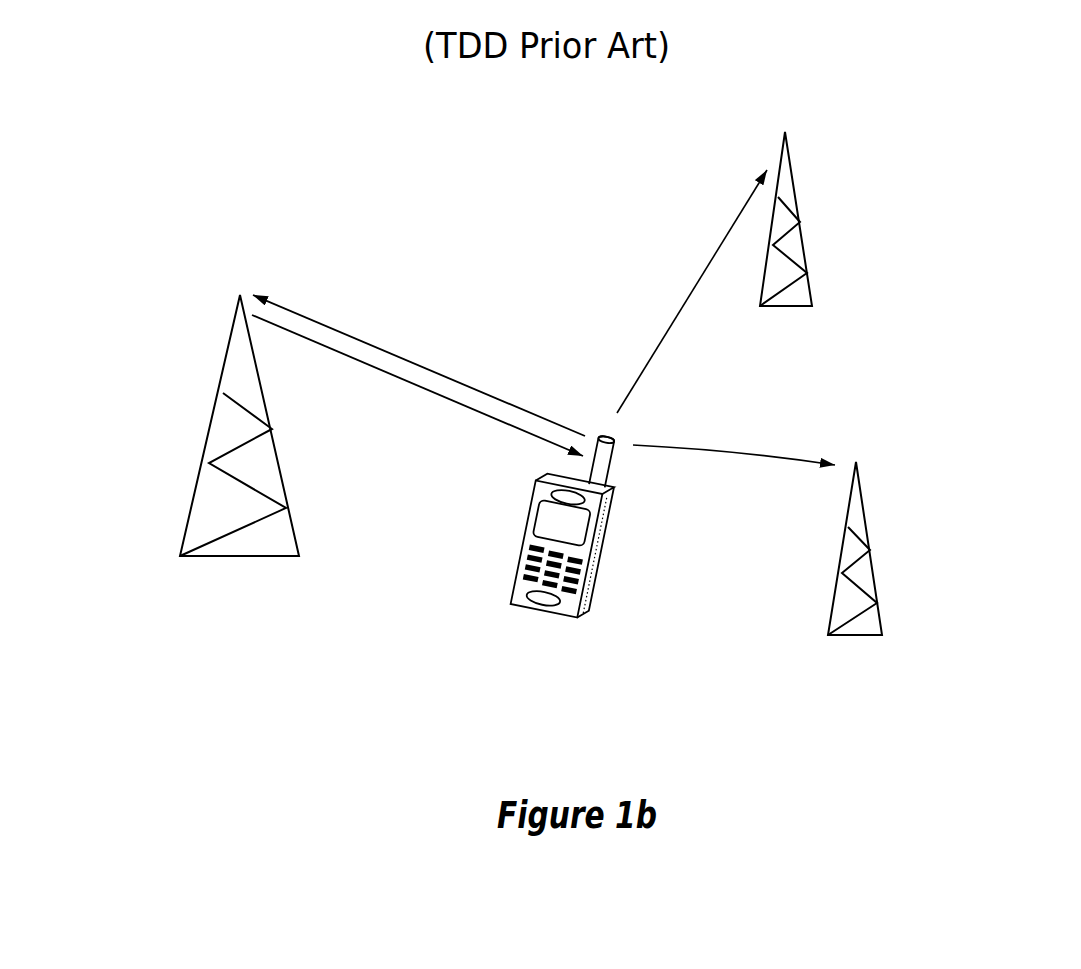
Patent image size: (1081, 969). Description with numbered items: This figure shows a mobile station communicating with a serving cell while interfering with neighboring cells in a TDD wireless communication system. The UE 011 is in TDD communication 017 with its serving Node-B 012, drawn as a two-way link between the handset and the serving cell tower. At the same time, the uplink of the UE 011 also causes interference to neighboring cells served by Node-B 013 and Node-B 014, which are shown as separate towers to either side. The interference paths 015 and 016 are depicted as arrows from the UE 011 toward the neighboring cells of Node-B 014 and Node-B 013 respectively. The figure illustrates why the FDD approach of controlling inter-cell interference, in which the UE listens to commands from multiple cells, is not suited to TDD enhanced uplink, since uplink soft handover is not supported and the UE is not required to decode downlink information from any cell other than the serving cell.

The UE 011 is at (565, 658).
The serving Node-B 012 is at (260, 636).
The Node-B 013 is at (980, 638).
The Node-B 014 is at (927, 337).
The interference to neighboring cell 015 is at (657, 276).
The interference to neighboring cell 016 is at (770, 489).
The TDD communication 017 is at (463, 361).